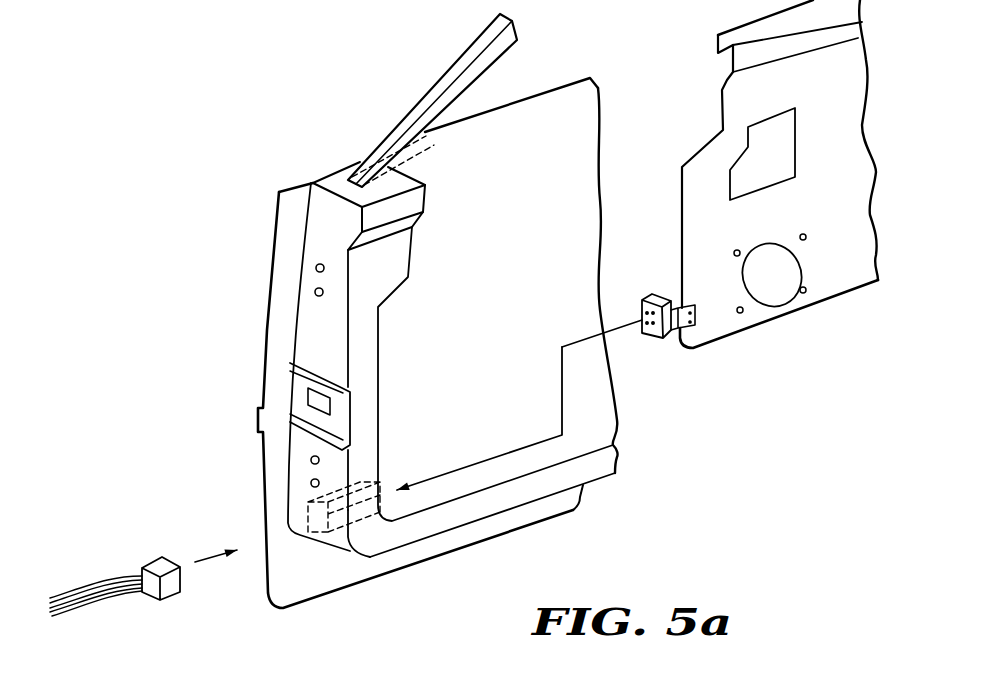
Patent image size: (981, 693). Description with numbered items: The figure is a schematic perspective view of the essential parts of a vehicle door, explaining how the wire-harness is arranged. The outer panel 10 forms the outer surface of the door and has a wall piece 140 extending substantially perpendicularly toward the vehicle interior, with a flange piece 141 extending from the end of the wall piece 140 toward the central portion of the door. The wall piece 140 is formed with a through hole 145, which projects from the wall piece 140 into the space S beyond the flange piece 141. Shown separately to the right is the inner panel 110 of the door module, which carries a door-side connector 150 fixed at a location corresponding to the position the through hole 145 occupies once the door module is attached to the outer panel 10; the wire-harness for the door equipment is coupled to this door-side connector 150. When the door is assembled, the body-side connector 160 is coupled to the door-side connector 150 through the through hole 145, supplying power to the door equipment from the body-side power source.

The outer panel 10 is at (246, 200).
The inner panel 110 is at (837, 287).
The wall piece 140 is at (296, 314).
The flange piece 141 is at (372, 550).
The through hole 145 is at (303, 500).
The door-side connector 150 is at (667, 337).
The body-side connector 160 is at (150, 562).